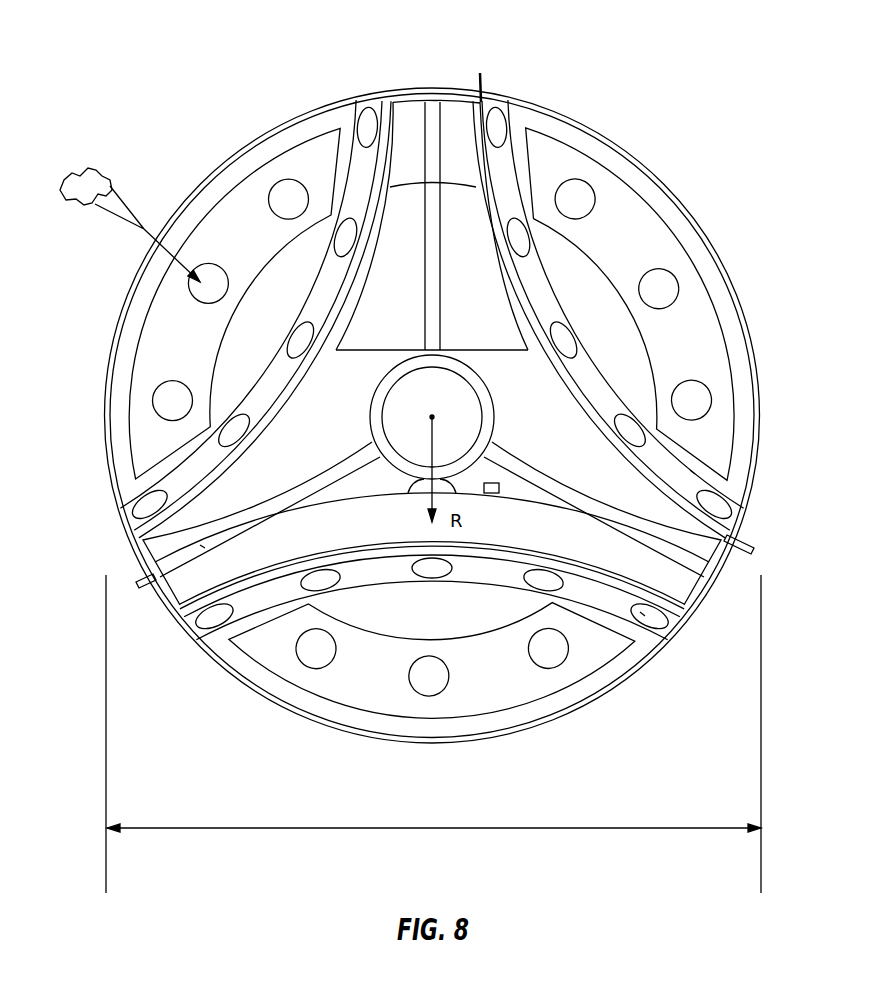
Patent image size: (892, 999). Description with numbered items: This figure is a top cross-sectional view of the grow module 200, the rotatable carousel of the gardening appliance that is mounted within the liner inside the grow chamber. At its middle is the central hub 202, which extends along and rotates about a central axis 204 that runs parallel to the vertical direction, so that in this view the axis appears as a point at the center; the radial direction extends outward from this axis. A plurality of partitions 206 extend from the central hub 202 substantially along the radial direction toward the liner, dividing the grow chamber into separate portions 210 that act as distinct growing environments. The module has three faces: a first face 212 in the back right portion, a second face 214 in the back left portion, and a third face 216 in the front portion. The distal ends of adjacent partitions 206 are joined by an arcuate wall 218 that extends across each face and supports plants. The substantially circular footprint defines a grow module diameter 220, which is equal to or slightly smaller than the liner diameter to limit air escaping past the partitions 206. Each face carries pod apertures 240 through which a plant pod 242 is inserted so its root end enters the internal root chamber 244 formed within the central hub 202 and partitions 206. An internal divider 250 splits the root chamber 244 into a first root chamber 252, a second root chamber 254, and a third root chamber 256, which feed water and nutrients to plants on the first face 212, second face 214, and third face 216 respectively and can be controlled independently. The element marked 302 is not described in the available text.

The grow module 200 is at (781, 86).
The central hub 202 is at (495, 410).
The central axis 204 is at (432, 417).
The partitions 206 is at (633, 590).
The portions of the grow chamber 210 is at (632, 357).
The first face 212 is at (603, 300).
The second face 214 is at (257, 253).
The third face 216 is at (490, 690).
The arcuate wall 218 is at (566, 566).
The grow module diameter 220 is at (190, 830).
The pod apertures 240 is at (302, 675).
The plant pod 242 is at (108, 220).
The root chamber 244 is at (247, 557).
The internal divider 250 is at (612, 520).
The first root chamber 252 is at (484, 264).
The second root chamber 254 is at (417, 264).
The third root chamber 256 is at (346, 538).
The strut 302 is at (258, 523).